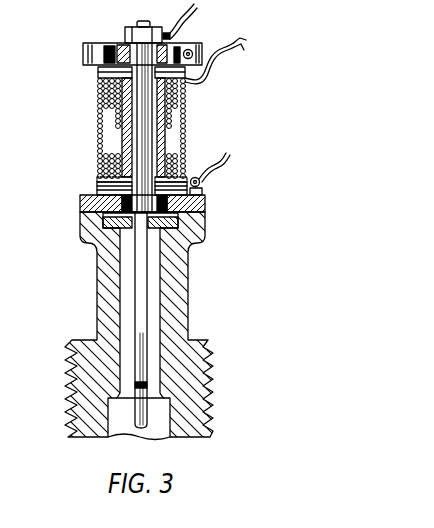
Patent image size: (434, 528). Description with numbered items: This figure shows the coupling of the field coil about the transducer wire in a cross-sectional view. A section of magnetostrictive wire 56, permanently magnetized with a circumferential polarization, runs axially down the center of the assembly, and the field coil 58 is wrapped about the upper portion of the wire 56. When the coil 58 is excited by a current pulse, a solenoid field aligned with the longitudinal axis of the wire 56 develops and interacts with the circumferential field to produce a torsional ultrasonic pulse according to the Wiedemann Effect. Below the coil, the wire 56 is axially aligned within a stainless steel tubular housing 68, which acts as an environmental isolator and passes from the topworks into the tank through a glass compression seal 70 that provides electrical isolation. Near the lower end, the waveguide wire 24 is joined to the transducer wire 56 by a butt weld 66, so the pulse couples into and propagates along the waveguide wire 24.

The waveguide wire 24 is at (133, 417).
The magnetostrictive wire 56 is at (138, 285).
The field coil 58 is at (112, 122).
The butt weld 66 is at (147, 385).
The tubular housing 68 is at (105, 245).
The glass compression seal 70 is at (185, 247).